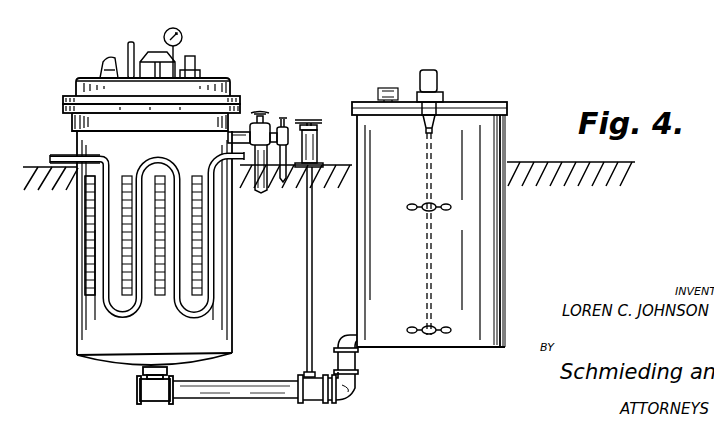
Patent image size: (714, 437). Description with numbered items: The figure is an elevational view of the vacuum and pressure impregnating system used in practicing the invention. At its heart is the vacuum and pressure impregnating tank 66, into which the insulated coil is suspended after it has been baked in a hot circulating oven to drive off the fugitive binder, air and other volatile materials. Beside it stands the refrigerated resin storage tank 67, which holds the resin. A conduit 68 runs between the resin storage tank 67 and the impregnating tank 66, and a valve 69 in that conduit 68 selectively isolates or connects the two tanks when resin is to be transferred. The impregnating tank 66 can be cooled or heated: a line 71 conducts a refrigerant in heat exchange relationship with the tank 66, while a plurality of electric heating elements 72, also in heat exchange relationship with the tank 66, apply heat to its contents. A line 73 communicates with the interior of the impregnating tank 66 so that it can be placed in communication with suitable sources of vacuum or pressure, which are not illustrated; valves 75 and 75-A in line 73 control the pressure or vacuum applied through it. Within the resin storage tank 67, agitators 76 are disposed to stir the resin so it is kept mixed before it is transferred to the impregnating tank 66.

The vacuum and pressure impregnating tank 66 is at (235, 68).
The refrigerated resin storage tank 67 is at (507, 106).
The conduit 68 is at (275, 345).
The valve 69 is at (313, 398).
The line 71 is at (62, 150).
The electric heating elements 72 is at (92, 297).
The line 73 is at (239, 131).
The valve 75 is at (268, 131).
The valve 75-A is at (285, 117).
The agitators 76 is at (447, 212).